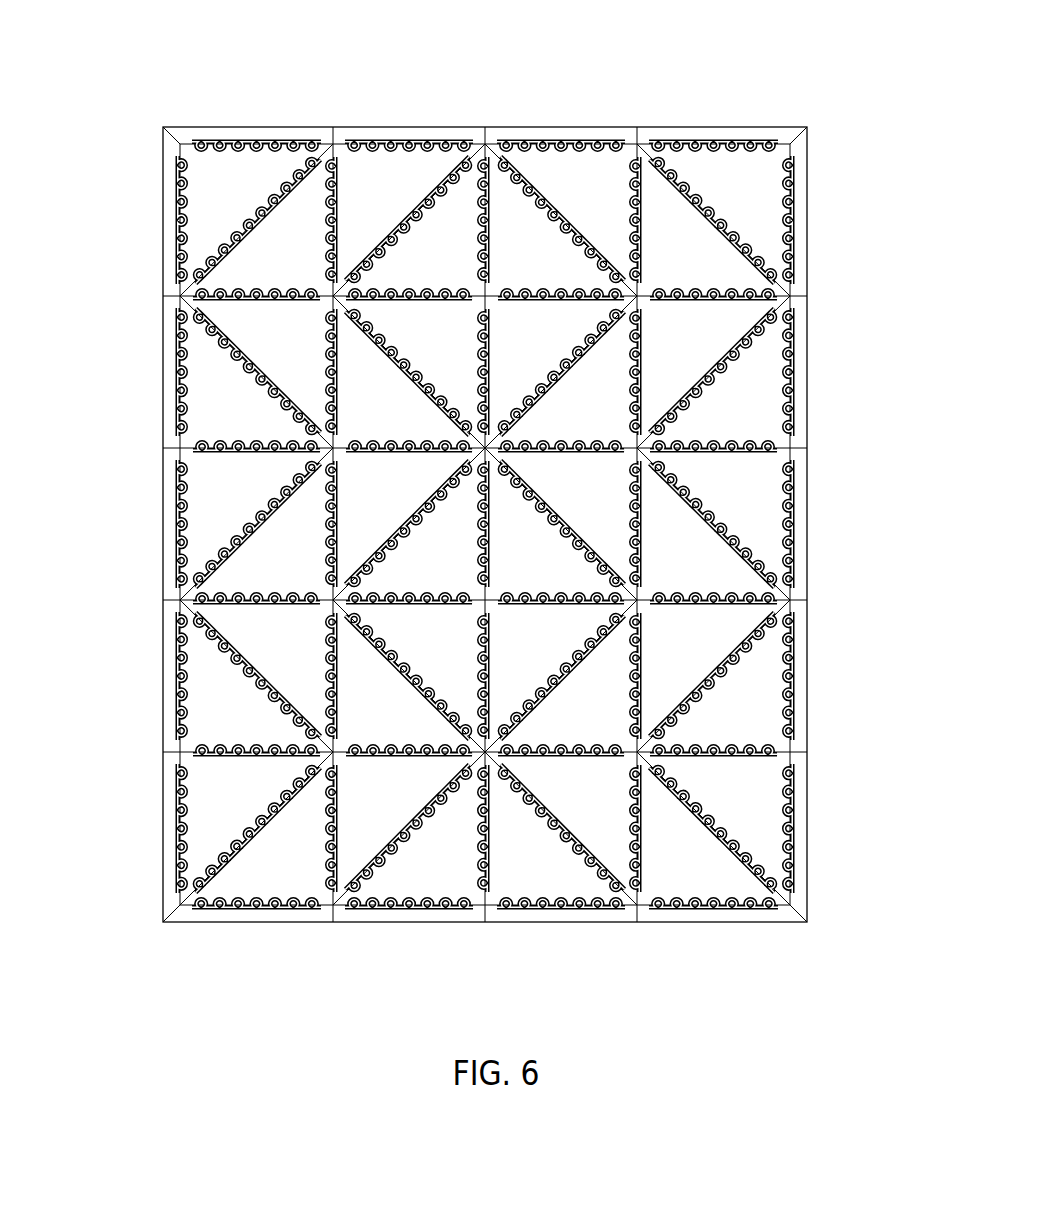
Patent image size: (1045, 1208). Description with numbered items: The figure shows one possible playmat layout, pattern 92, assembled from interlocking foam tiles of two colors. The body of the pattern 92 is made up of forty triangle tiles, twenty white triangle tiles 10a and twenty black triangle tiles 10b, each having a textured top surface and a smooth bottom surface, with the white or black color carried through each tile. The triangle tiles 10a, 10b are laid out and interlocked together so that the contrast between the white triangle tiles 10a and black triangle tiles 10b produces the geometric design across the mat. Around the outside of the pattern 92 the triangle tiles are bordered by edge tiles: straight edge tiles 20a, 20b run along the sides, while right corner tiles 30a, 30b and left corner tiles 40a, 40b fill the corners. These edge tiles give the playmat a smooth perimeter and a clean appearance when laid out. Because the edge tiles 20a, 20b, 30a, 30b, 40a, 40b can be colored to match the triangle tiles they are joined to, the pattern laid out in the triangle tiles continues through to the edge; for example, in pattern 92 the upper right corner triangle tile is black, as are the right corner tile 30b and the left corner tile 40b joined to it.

The pattern 92 is at (148, 938).
The triangle tile 10a is at (362, 168).
The triangle tile 10b is at (710, 175).
The straight edge tile 20a is at (400, 125).
The straight edge tile 20b is at (807, 380).
The right corner tile 30a is at (705, 922).
The right corner tile 30b is at (222, 125).
The left corner tile 40a is at (245, 922).
The left corner tile 40b is at (745, 125).